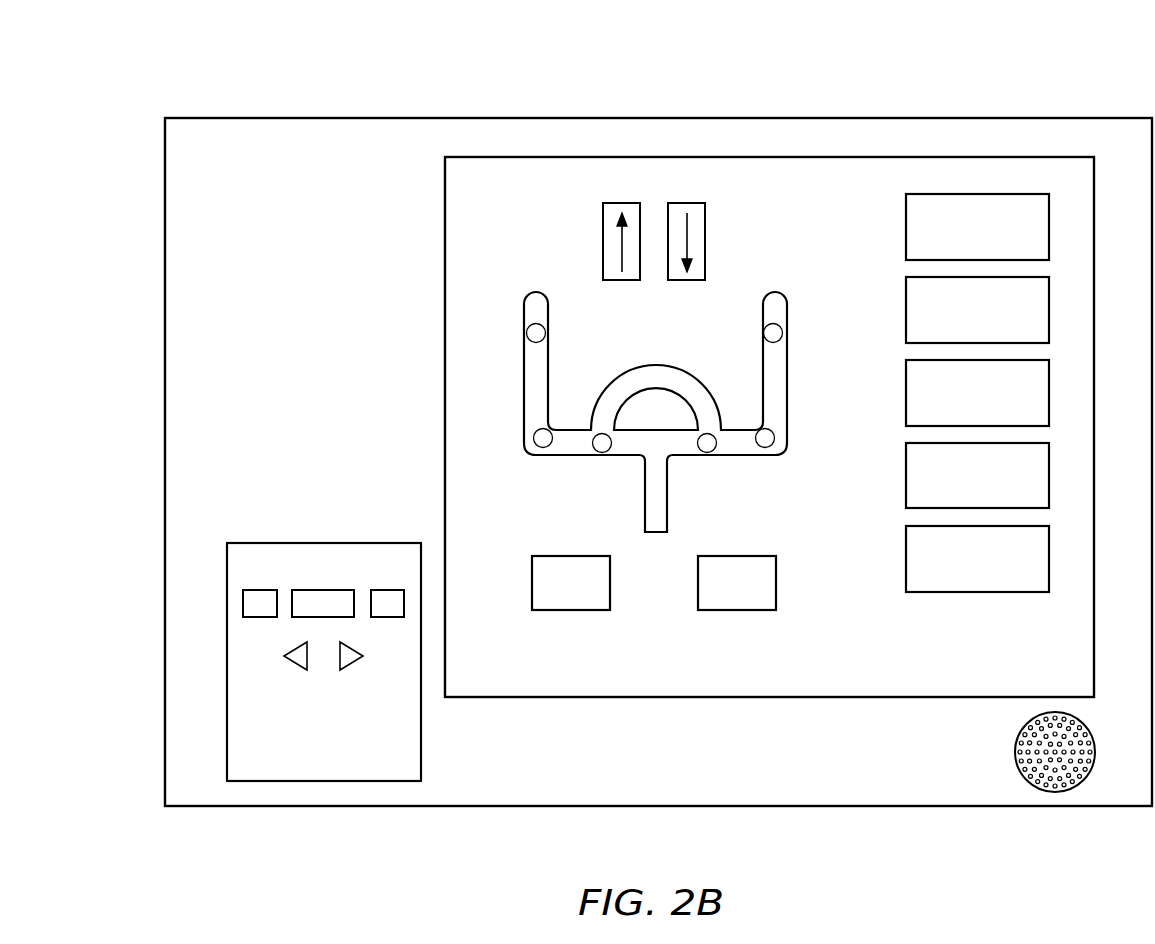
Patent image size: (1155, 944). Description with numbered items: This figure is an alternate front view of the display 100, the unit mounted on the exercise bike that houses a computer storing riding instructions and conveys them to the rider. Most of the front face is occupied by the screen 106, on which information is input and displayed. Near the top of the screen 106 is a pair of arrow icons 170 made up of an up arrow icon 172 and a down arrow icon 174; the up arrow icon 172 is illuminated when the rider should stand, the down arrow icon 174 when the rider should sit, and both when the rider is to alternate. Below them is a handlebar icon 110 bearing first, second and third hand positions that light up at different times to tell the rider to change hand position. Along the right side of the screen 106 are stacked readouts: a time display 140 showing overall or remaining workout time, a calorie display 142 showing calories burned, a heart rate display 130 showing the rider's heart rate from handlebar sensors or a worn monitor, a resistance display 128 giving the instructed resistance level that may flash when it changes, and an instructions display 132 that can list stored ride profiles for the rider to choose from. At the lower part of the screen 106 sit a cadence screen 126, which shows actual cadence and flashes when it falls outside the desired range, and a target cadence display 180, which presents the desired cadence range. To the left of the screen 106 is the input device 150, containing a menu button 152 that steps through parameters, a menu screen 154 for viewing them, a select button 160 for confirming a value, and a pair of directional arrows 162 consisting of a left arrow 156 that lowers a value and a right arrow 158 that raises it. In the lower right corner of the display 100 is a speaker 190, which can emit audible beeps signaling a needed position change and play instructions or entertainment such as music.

The display 100 is at (580, 84).
The screen 106 is at (788, 188).
The handlebar icon 110 is at (524, 372).
The cadence screen 126 is at (571, 610).
The resistance display 128 is at (906, 475).
The heart rate display 130 is at (906, 392).
The instructions display 132 is at (906, 558).
The time display 140 is at (906, 226).
The calorie display 142 is at (906, 309).
The input device 150 is at (287, 540).
The menu button 152 is at (260, 590).
The menu screen 154 is at (324, 590).
The left arrow 156 is at (300, 670).
The right arrow 158 is at (352, 664).
The select button 160 is at (387, 590).
The directional arrows 162 is at (327, 683).
The arrow icons 170 is at (582, 223).
The up arrow icon 172 is at (603, 251).
The down arrow icon 174 is at (705, 242).
The target cadence display 180 is at (738, 610).
The speaker 190 is at (1015, 752).